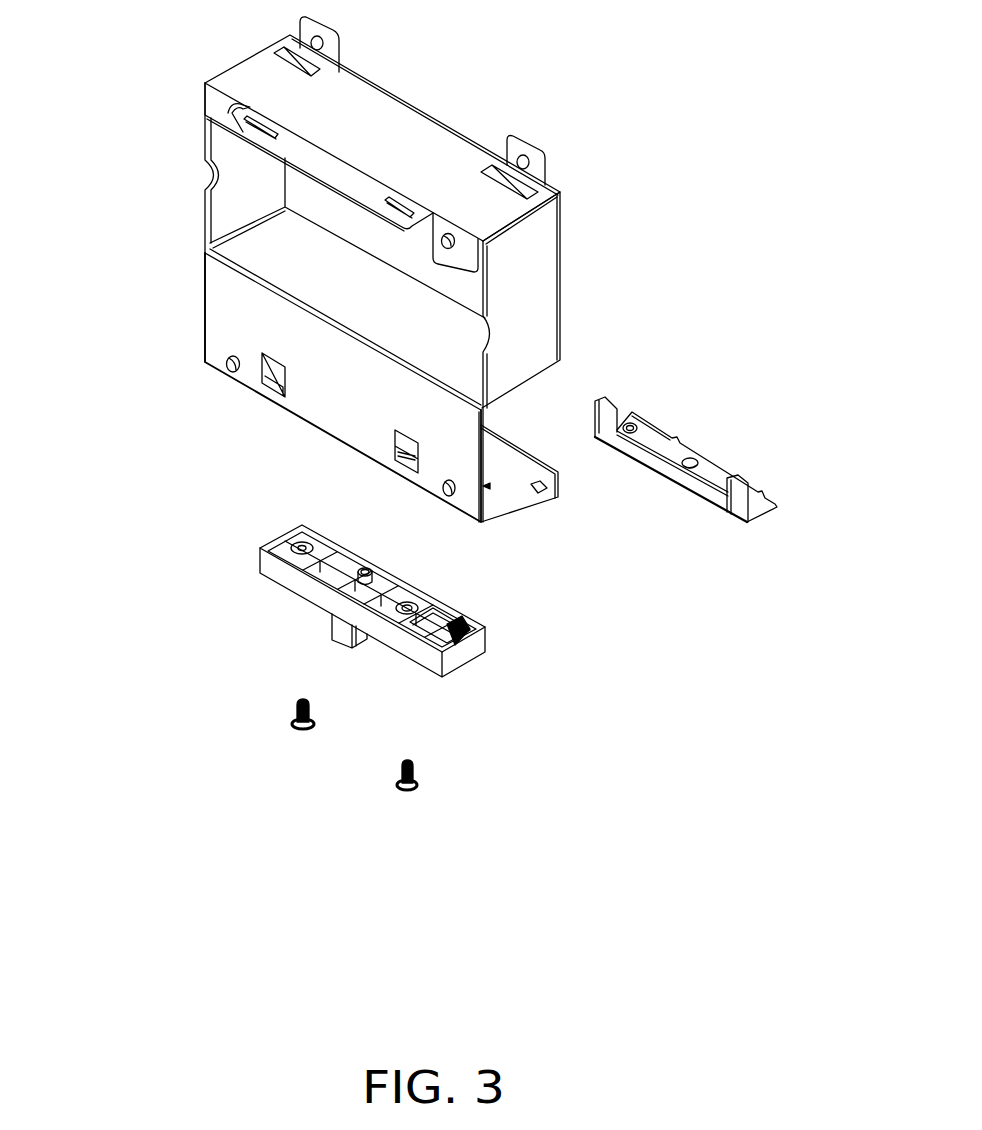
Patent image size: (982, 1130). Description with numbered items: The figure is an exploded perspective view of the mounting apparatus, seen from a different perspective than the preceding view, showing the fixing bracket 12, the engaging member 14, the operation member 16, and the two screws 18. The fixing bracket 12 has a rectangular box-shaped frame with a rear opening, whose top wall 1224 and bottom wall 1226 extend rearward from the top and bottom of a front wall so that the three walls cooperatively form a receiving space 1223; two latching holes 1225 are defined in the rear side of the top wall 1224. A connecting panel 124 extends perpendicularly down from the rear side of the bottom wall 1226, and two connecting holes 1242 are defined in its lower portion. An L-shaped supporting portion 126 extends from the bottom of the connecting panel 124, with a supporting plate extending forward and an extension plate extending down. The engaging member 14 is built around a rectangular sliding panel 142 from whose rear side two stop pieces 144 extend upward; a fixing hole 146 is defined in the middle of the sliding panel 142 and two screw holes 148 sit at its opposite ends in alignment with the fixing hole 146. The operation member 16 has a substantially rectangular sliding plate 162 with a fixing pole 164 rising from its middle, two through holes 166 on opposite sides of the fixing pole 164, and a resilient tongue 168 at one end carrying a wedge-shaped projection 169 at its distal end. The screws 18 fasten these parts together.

The fixing bracket 12 is at (615, 162).
The top wall 1224 is at (358, 98).
The latching holes 1225 is at (404, 212).
The receiving space 1223 is at (233, 200).
The bottom wall 1226 is at (243, 252).
The connecting panel 124 is at (220, 310).
The connecting holes 1242 is at (262, 368).
The supporting portion 126 is at (512, 490).
The engaging member 14 is at (710, 405).
The sliding panel 142 is at (728, 467).
The stop pieces 144 is at (743, 490).
The fixing hole 146 is at (698, 463).
The screw holes 148 is at (630, 424).
The operation member 16 is at (520, 633).
The sliding plate 162 is at (463, 657).
The fixing pole 164 is at (368, 562).
The through holes 166 is at (425, 607).
The resilient tongue 168 is at (435, 627).
The wedge-shaped projection 169 is at (340, 630).
The screws 18 is at (412, 786).